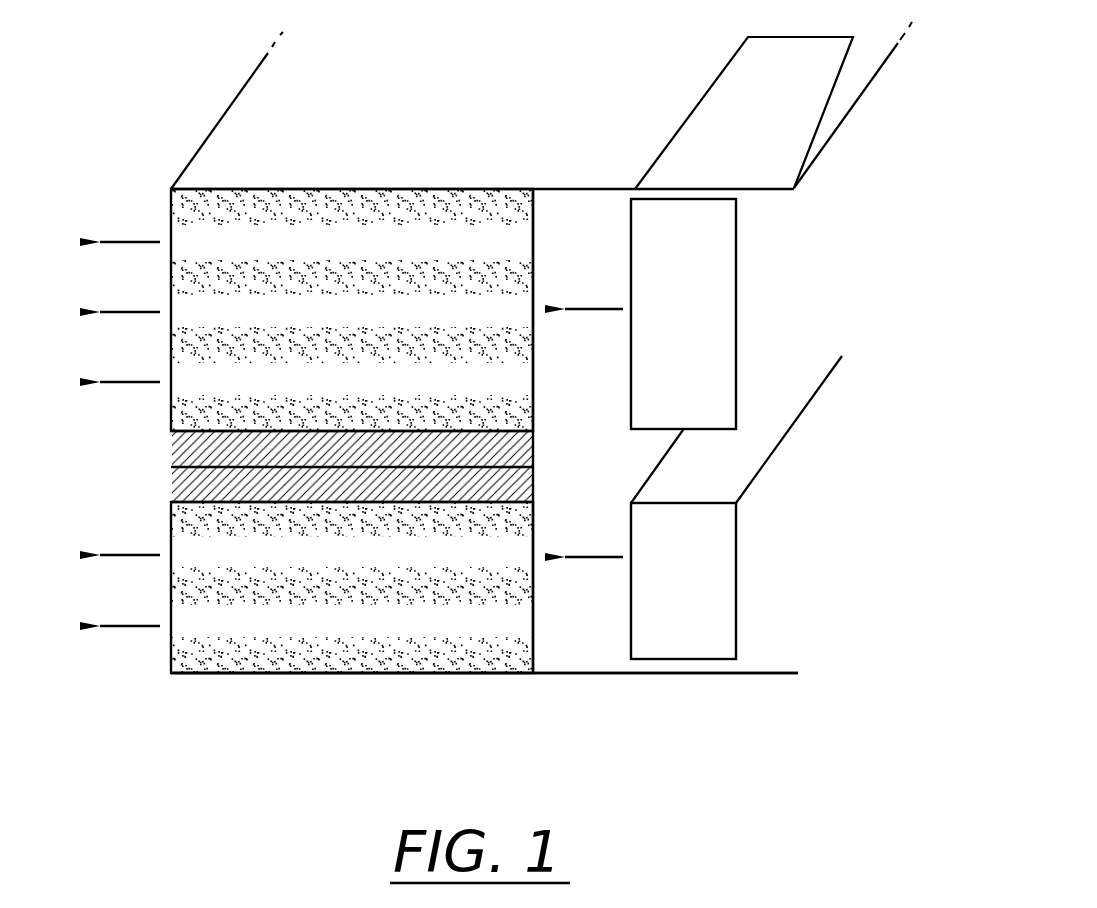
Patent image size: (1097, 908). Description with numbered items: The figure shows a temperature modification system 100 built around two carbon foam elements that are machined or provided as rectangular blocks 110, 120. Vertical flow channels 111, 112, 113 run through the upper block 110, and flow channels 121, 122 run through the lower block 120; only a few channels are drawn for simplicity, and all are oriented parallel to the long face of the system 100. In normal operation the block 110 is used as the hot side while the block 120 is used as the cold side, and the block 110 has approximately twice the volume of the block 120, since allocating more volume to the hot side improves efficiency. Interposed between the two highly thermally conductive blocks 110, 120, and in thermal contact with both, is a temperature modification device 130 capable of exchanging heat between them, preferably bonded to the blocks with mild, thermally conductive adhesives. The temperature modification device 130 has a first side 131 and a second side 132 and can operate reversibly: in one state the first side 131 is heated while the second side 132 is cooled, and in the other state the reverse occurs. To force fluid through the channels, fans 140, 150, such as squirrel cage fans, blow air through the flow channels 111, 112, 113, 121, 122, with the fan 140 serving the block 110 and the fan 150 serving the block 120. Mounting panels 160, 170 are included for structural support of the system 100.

The temperature modification system 100 is at (578, 58).
The carbon foam block 110 is at (290, 274).
The flow channel 111 is at (372, 255).
The flow channel 112 is at (372, 322).
The flow channel 113 is at (372, 390).
The carbon foam block 120 is at (290, 620).
The flow channel 121 is at (372, 564).
The flow channel 122 is at (372, 633).
The temperature modification device 130 is at (345, 454).
The first side 131 is at (533, 450).
The second side 132 is at (533, 480).
The fan 140 is at (737, 342).
The fan 150 is at (737, 580).
The mounting panel 160 is at (558, 188).
The mounting panel 170 is at (568, 675).